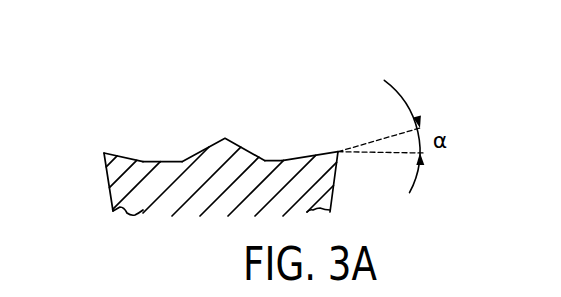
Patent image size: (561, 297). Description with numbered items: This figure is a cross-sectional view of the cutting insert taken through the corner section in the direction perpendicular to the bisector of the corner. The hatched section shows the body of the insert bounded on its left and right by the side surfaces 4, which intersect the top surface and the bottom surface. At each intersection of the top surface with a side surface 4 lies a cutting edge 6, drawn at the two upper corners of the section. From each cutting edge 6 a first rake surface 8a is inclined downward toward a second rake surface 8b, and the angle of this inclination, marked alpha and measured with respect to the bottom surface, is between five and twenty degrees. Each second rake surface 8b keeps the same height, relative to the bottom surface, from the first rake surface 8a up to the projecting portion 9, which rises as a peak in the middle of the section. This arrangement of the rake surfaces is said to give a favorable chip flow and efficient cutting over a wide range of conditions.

The side surface 4 is at (109, 188).
The cutting edge 6 is at (104, 153).
The first rake surface 8a is at (127, 158).
The second rake surface 8b is at (167, 162).
The projecting portion 9 is at (198, 153).